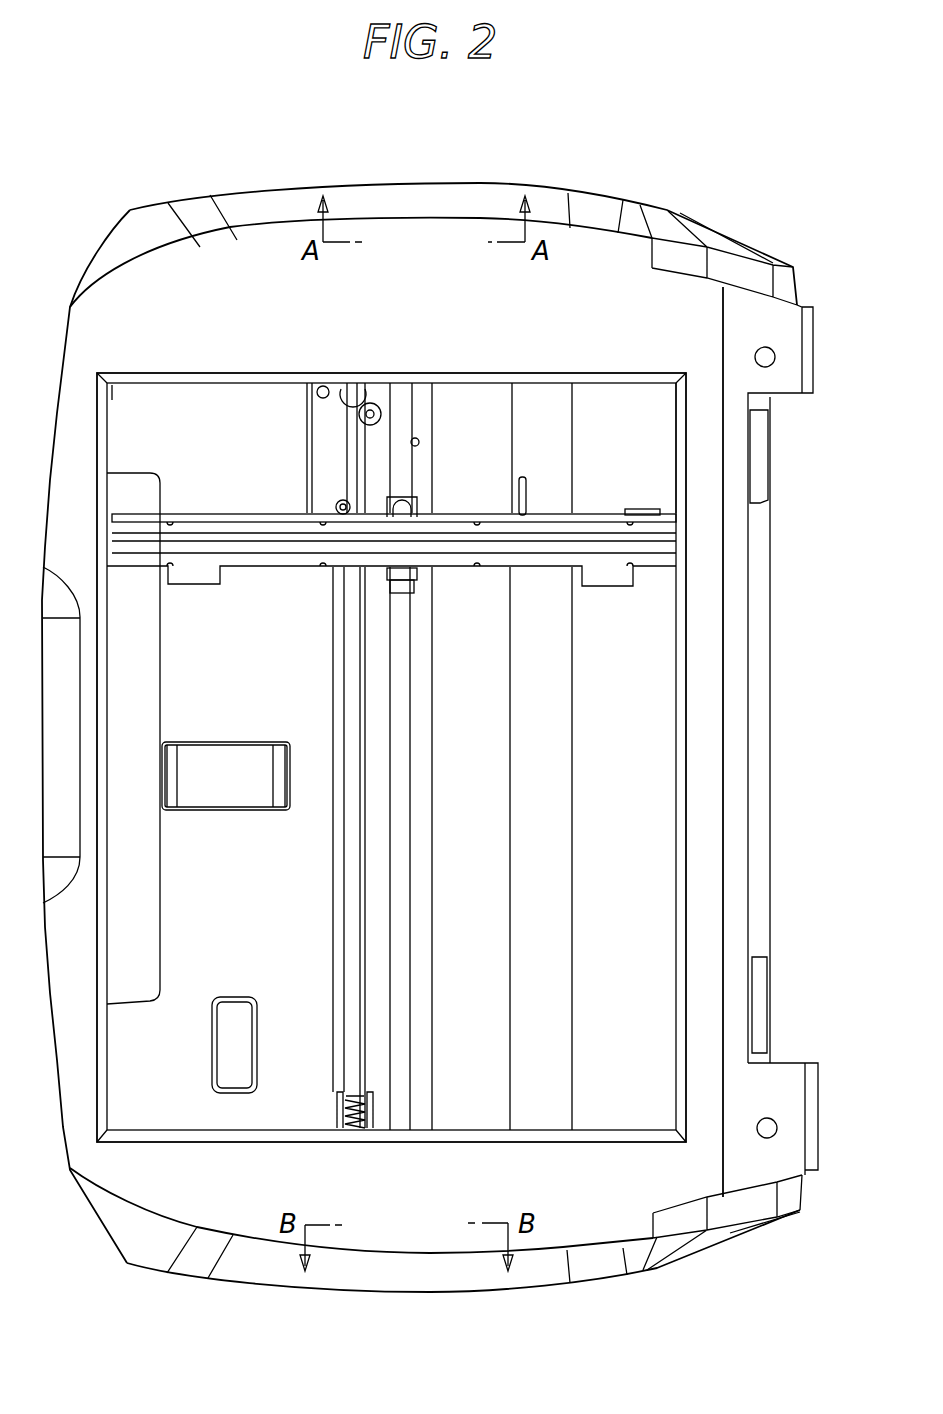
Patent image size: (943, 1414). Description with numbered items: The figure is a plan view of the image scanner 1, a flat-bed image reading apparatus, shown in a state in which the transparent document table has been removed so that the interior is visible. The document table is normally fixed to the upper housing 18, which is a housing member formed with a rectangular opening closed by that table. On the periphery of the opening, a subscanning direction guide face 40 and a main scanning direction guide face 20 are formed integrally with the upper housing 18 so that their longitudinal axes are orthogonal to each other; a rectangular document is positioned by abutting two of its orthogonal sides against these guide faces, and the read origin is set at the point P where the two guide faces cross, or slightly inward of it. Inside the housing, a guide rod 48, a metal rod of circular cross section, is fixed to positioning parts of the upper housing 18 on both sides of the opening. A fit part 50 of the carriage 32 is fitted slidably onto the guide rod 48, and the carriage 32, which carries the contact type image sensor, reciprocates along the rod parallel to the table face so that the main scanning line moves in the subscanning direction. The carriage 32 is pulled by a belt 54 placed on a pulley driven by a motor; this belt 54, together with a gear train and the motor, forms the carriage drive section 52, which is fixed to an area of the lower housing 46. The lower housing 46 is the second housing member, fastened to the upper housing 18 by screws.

The image scanner 1 is at (713, 197).
The upper housing 18 is at (693, 313).
The main scanning direction guide face 20 is at (587, 387).
The carriage 32 is at (253, 567).
The subscanning direction guide face 40 is at (670, 710).
The lower housing 46 is at (650, 822).
The guide rod 48 is at (397, 665).
The fit part 50 is at (407, 586).
The carriage drive section 52 is at (334, 401).
The belt 54 is at (347, 438).
The point P is at (673, 387).